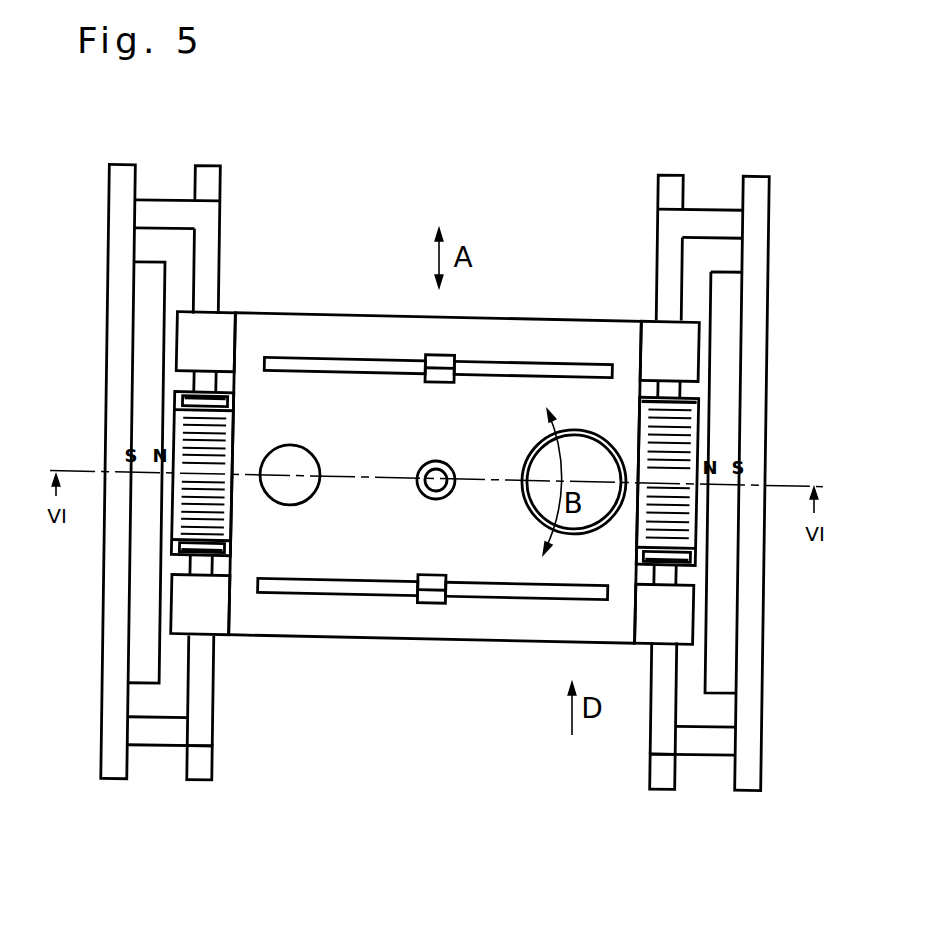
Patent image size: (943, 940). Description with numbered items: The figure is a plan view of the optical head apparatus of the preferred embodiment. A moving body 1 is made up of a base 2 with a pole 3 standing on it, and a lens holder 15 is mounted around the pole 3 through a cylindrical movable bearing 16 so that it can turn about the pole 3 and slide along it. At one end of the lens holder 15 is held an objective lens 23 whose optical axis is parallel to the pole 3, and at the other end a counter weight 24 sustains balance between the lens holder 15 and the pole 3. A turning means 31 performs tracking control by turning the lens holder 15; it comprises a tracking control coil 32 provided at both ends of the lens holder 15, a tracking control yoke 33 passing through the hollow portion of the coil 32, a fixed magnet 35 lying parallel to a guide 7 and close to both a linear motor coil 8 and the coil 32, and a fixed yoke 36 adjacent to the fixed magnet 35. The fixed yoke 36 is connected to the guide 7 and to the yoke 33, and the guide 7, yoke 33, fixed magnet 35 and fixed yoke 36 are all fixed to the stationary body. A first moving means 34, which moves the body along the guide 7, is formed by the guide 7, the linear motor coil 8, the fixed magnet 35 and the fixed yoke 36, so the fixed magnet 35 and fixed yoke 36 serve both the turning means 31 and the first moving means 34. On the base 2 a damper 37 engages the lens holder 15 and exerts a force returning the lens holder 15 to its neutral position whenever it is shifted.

The moving body 1 is at (273, 313).
The base 2 is at (527, 315).
The pole 3 is at (440, 463).
The guide 7 is at (212, 763).
The linear motor coil 8 is at (177, 548).
The lens holder 15 is at (345, 563).
The movable bearing 16 is at (449, 495).
The objective lens 23 is at (583, 447).
The counter weight 24 is at (305, 458).
The turning means 31 is at (172, 500).
The tracking control coil 32 is at (183, 518).
The tracking control yoke 33 is at (215, 675).
The first moving means 34 is at (183, 398).
The fixed magnet 35 is at (137, 300).
The fixed yoke 36 is at (107, 256).
The damper 37 is at (353, 360).